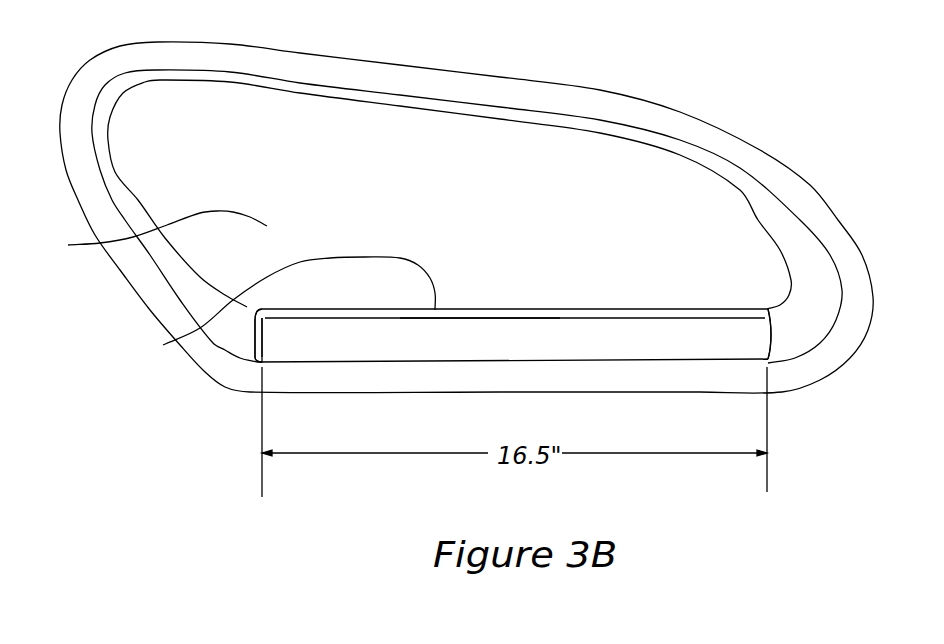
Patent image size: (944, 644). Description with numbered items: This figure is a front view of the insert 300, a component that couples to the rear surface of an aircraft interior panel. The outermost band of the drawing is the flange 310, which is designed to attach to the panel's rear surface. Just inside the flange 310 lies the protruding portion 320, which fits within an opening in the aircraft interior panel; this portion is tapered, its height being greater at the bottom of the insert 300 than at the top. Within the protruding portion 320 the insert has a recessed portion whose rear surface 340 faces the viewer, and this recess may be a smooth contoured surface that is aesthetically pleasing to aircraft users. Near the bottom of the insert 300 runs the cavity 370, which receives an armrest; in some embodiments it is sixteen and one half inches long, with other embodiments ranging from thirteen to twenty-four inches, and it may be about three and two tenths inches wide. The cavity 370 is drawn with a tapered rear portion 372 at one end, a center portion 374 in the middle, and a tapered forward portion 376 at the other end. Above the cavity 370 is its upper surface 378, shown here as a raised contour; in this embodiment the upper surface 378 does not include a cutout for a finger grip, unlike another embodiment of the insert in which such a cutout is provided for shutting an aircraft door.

The insert 300 is at (585, 73).
The flange 310 is at (368, 73).
The protruding portion 320 is at (198, 75).
The rear surface 340 is at (146, 235).
The cavity 370 is at (563, 343).
The tapered rear portion 372 is at (278, 337).
The center portion 374 is at (477, 330).
The tapered forward portion 376 is at (750, 333).
The upper surface 378 is at (276, 309).